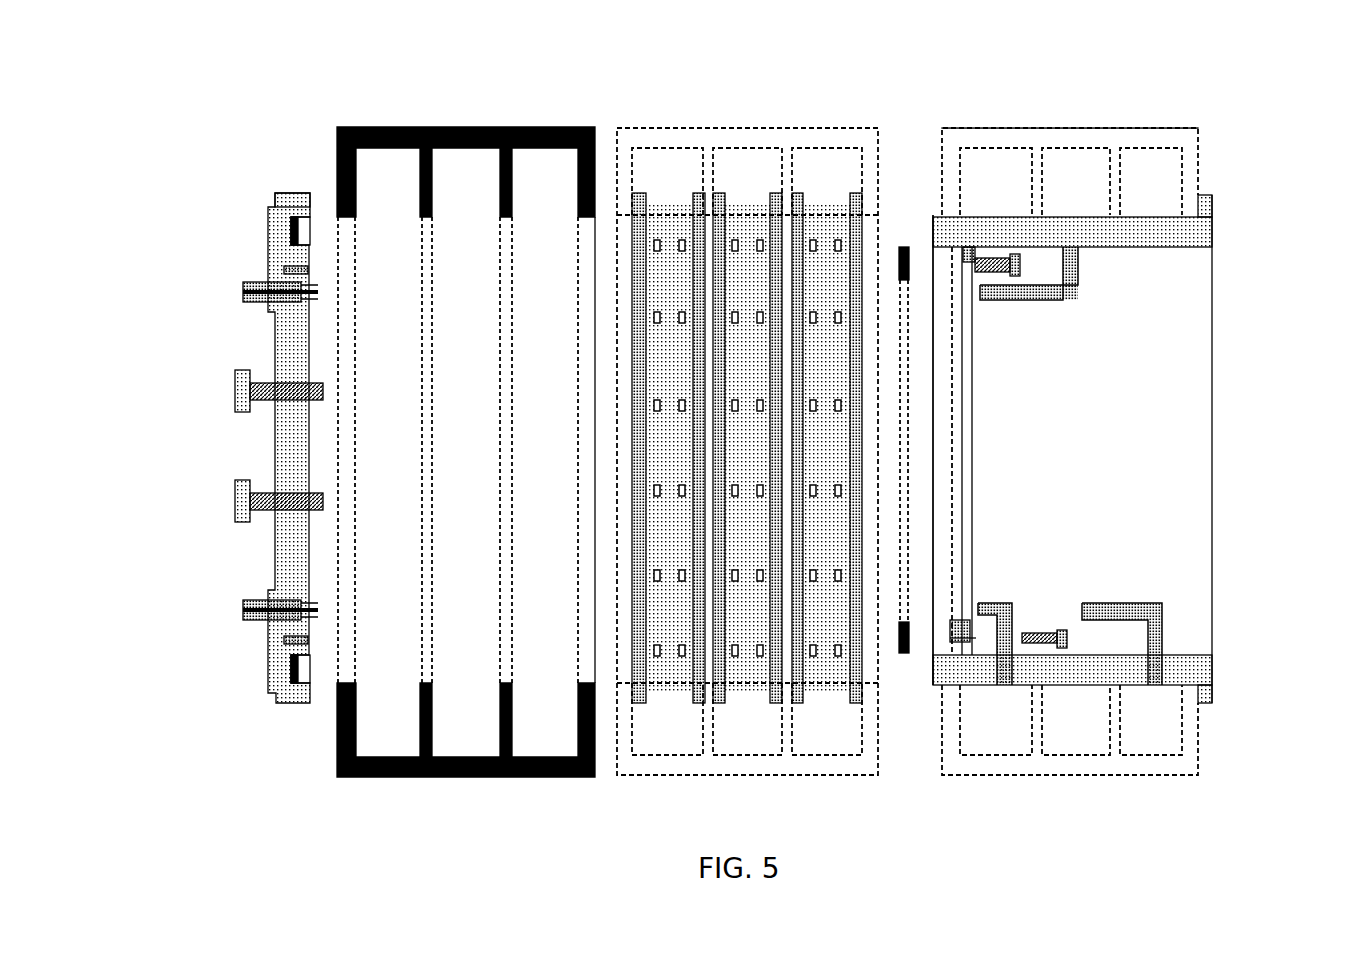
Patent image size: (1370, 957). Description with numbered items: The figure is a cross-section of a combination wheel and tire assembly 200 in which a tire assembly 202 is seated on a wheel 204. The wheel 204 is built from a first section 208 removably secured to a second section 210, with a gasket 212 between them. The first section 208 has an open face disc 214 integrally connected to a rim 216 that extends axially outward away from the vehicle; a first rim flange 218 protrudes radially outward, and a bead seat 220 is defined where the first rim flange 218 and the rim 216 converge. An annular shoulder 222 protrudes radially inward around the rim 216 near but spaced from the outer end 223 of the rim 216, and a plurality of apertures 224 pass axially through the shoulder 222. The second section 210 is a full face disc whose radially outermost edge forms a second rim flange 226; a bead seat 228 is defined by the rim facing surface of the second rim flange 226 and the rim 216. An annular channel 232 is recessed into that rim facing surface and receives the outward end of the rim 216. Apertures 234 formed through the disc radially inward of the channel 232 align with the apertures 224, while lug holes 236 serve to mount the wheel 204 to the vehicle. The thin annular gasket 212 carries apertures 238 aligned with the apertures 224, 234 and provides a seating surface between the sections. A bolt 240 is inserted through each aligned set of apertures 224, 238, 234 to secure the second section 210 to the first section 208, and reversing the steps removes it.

The combination wheel and tire assembly 200 is at (1232, 74).
The tire assembly 202 is at (556, 95).
The wheel 204 is at (238, 690).
The first section 208 is at (1222, 346).
The second section 210 is at (272, 445).
The gasket 212 is at (905, 662).
The disc 214 is at (1216, 234).
The rim 216 is at (1122, 255).
The first rim flange 218 is at (1217, 210).
The bead seat 220 is at (1215, 194).
The annular shoulder 222 is at (978, 262).
The outer end 223 is at (930, 232).
The apertures 224 is at (1000, 628).
The second rim flange 226 is at (283, 190).
The bead seat 228 is at (320, 213).
The annular channel 232 is at (302, 240).
The apertures 234 is at (292, 270).
The lug holes 236 is at (272, 510).
The apertures 238 is at (898, 262).
The bolt 240 is at (1020, 266).